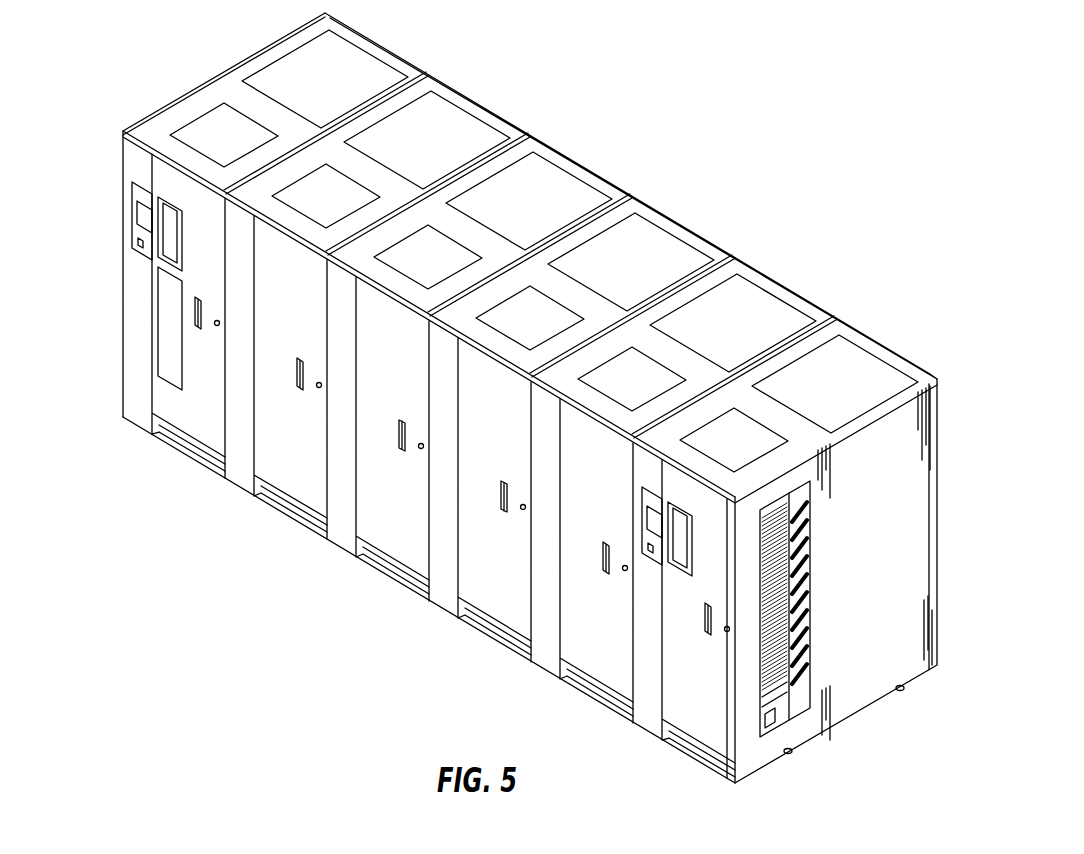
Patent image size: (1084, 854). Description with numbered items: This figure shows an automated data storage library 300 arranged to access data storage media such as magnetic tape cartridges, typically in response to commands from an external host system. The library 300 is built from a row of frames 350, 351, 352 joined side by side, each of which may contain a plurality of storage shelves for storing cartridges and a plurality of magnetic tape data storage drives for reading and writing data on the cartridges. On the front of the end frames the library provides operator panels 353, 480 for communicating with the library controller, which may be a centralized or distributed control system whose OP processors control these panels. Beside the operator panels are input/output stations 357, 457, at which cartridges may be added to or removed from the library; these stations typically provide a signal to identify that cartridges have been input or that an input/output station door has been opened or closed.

The automated data storage library 300 is at (500, 397).
The frame 350 is at (759, 547).
The frame 351 is at (466, 95).
The frame 352 is at (252, 241).
The operator panel 353 is at (647, 513).
The input/output station 357 is at (681, 552).
The input/output station 457 is at (176, 242).
The operator panel 480 is at (138, 210).